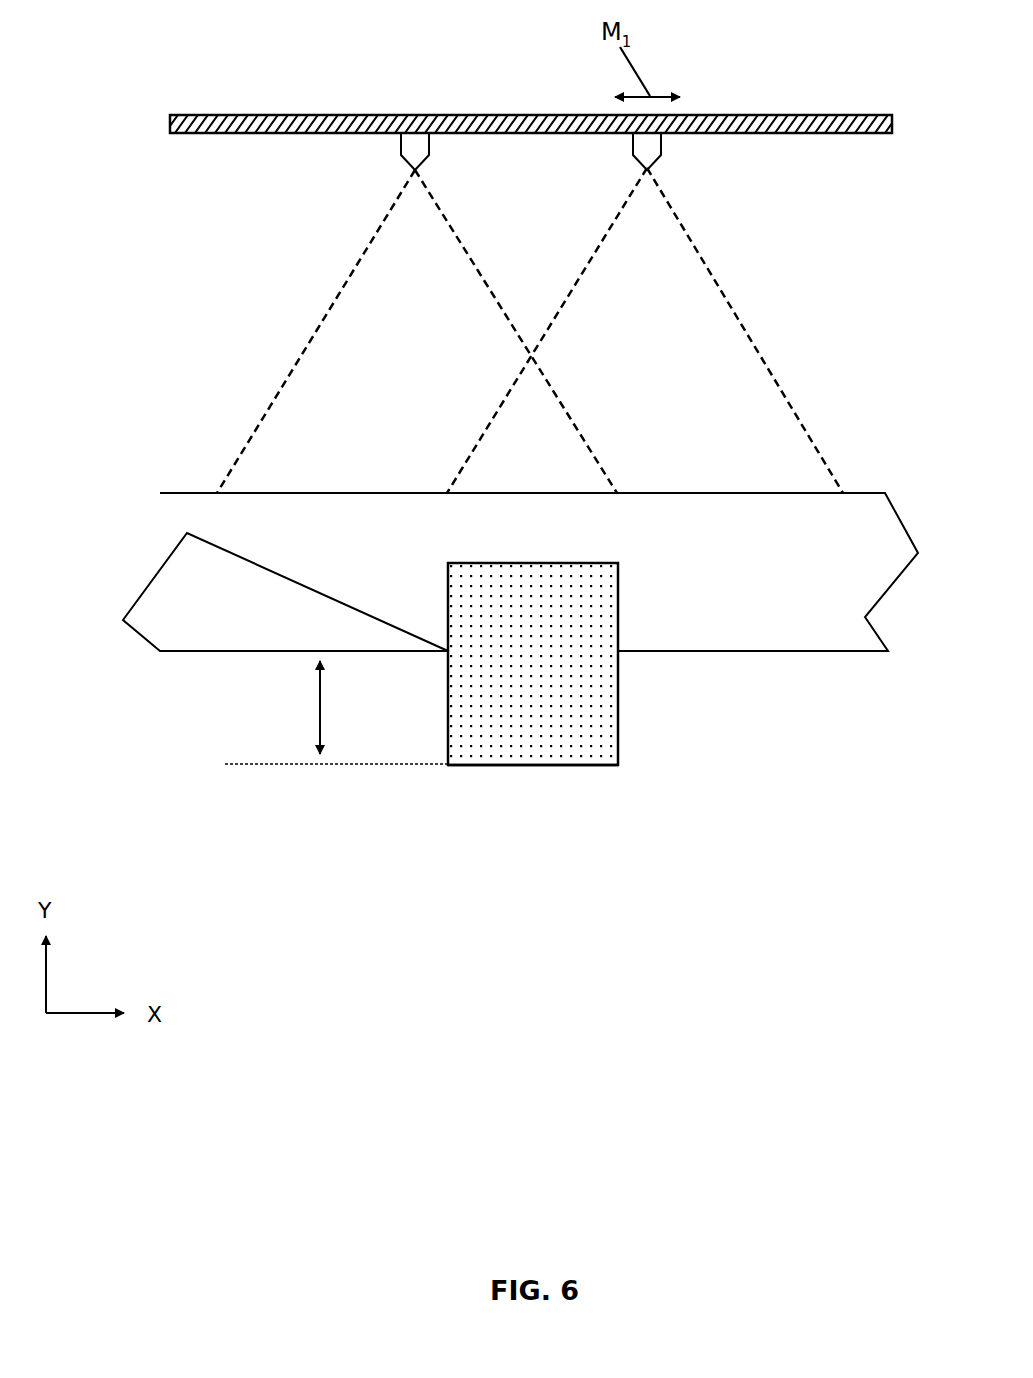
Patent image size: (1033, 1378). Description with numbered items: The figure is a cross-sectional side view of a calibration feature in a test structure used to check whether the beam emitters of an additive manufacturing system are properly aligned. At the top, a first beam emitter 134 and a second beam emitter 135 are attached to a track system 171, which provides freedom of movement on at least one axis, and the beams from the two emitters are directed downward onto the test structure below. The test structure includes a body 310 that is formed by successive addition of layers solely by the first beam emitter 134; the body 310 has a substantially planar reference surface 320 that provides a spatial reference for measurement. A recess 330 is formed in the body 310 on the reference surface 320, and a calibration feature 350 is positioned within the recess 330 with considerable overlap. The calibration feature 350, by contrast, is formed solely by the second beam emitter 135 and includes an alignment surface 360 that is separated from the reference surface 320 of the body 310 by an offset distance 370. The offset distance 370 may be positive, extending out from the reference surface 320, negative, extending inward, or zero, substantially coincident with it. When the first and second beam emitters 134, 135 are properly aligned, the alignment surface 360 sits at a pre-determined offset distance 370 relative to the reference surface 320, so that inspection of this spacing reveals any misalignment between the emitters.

The track system 171 is at (218, 133).
The first beam emitter 134 is at (403, 155).
The second beam emitter 135 is at (655, 152).
The body 310 is at (227, 520).
The reference surface 320 is at (800, 652).
The recess 330 is at (495, 563).
The calibration feature 350 is at (535, 660).
The alignment surface 360 is at (533, 765).
The offset distance 370 is at (320, 710).